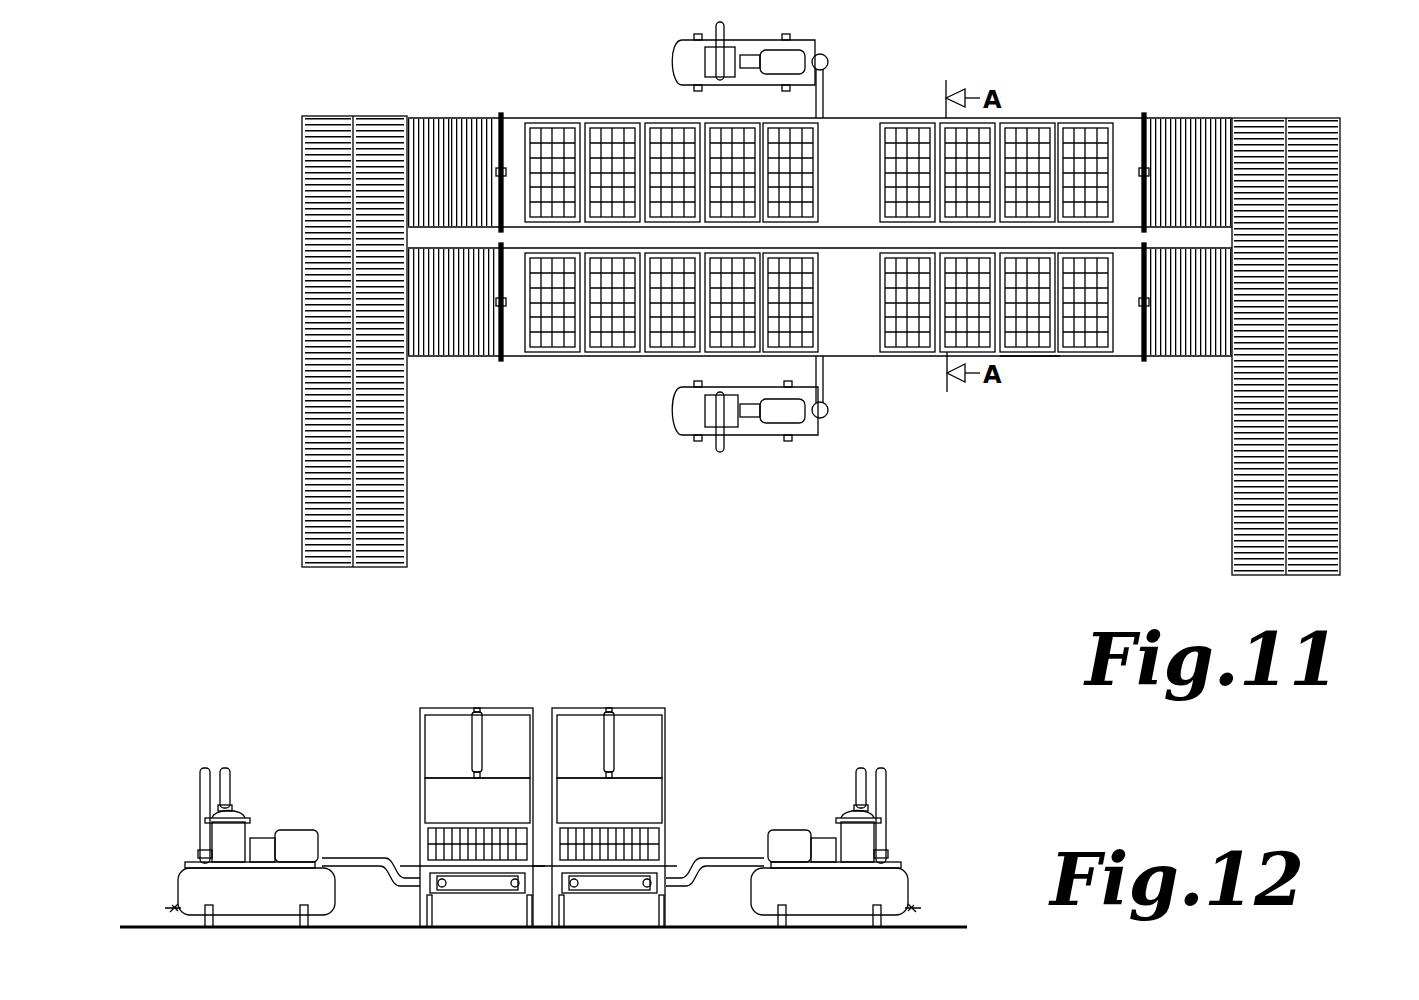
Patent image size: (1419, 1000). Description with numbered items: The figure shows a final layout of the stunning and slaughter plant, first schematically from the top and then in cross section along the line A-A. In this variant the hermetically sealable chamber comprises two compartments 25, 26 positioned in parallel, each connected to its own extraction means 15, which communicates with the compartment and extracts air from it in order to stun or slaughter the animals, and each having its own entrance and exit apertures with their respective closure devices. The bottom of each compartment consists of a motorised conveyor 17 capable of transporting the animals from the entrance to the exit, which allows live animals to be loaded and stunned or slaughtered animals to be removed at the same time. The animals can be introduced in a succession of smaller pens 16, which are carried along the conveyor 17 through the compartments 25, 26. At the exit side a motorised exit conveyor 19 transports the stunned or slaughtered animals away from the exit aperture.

In FIG. 11, the extraction means 15 is at (670, 65).
In FIG. 11, the pens 16 is at (1045, 352).
In FIG. 11, the motorised conveyor 17 is at (864, 186).
In FIG. 11, the motorised exit conveyor 19 is at (300, 424).
In FIG. 11, the compartment 25 is at (857, 374).
In FIG. 12, the compartment 25 is at (688, 757).
In FIG. 11, the compartment 26 is at (858, 102).
In FIG. 12, the compartment 26 is at (400, 755).